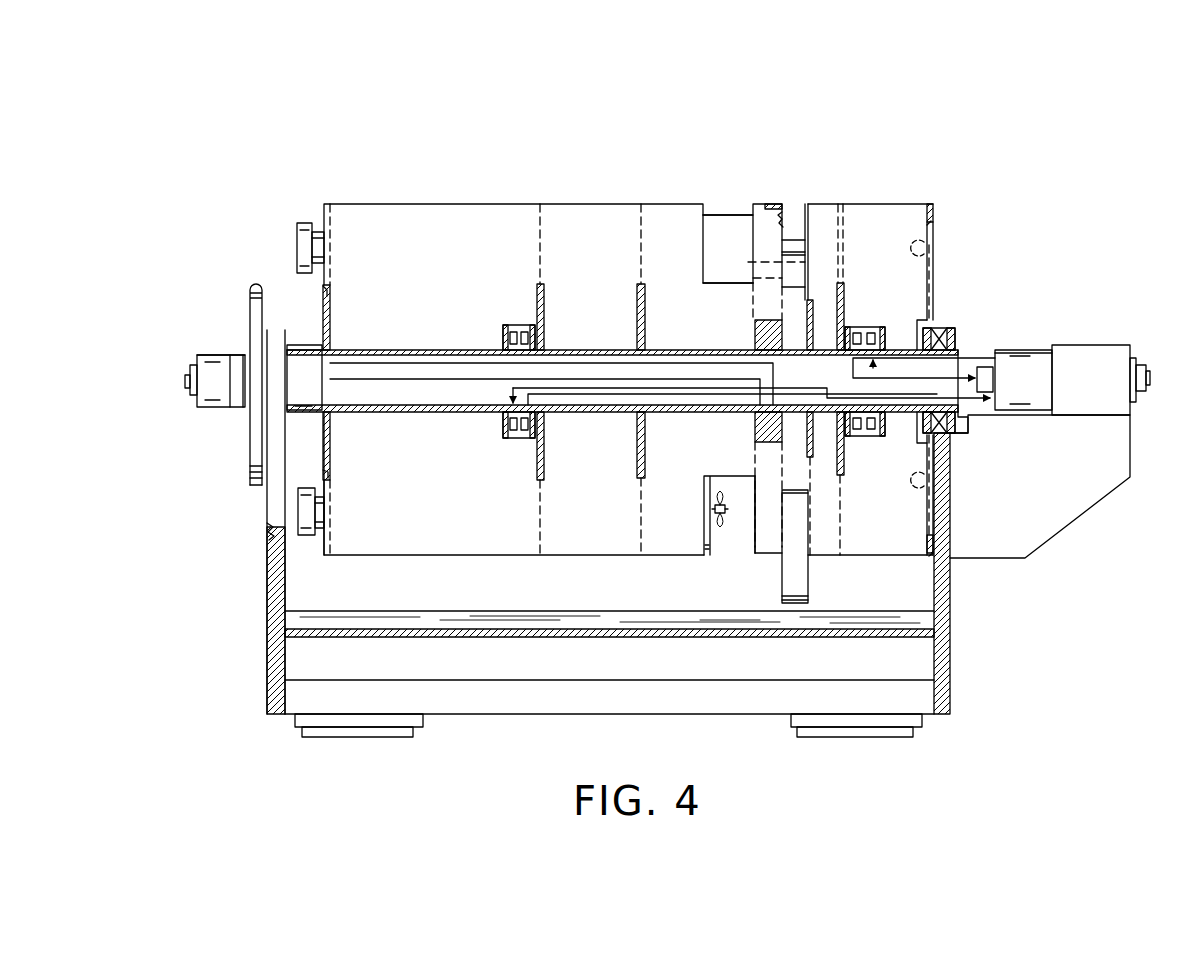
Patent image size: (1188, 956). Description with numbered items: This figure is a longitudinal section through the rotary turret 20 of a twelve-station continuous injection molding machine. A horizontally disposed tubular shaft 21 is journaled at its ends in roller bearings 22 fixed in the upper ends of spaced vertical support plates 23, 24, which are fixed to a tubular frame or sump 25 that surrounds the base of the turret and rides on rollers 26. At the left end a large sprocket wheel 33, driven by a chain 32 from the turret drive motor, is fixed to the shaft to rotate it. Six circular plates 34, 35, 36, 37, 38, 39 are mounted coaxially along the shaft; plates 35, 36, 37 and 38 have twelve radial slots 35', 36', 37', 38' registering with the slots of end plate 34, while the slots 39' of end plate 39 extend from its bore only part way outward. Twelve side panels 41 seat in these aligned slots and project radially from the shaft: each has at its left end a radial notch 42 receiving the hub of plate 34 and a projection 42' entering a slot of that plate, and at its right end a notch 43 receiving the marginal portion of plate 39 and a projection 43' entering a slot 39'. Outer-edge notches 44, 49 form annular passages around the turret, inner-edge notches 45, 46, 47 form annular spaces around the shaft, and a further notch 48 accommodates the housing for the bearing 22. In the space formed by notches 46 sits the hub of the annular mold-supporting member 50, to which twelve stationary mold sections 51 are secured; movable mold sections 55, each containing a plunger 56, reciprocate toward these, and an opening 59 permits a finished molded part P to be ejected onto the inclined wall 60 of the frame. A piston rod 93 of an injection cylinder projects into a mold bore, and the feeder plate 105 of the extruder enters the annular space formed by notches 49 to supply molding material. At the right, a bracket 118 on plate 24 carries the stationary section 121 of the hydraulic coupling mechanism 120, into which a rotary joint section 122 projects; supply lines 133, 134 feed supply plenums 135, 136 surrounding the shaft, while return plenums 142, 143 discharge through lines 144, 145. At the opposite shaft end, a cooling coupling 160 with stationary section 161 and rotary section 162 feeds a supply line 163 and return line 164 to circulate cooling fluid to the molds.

The rotary turret 20 is at (910, 184).
The tubular shaft 21 is at (415, 350).
The roller bearings 22 is at (940, 332).
The support plate 23 is at (268, 505).
The support plate 24 is at (950, 666).
The tubular frame or sump 25 is at (525, 714).
The rollers 26 is at (373, 735).
The chain 32 is at (248, 478).
The sprocket wheel 33 is at (250, 294).
The circular metal plate 34 is at (323, 318).
The circular metal plate 35 is at (558, 382).
The radial slots 35' is at (561, 356).
The circular metal plate 36 is at (625, 381).
The radial slots 36' is at (614, 379).
The circular metal plate 37 is at (792, 427).
The radial slots 37' is at (759, 398).
The circular metal plate 38 is at (858, 357).
The radial slots 38' is at (867, 356).
The circular metal plate 39 is at (956, 374).
The slots 39' is at (956, 365).
The side panels 41 is at (480, 202).
The first radial notch 42 is at (339, 366).
The projection 42' is at (307, 380).
The radial notch 43 is at (906, 386).
The projection 43' is at (965, 390).
The rectangular notch 44 is at (754, 220).
The notch 45 is at (510, 328).
The notch 46 is at (755, 322).
The notch 47 is at (868, 440).
The notch 48 is at (918, 320).
The rectangular notch 49 is at (808, 218).
The mold-supporting member 50 is at (754, 328).
The stationary mold sections 51 is at (772, 204).
The movable mold sections 55 is at (706, 210).
The plunger 56 is at (715, 508).
The opening 59 is at (742, 543).
The inclined wall 60 is at (568, 636).
The piston rod 93 is at (793, 240).
The feeder plate 105 is at (808, 590).
The bracket 118 is at (1090, 515).
The hydraulic coupling mechanism 120 is at (1137, 338).
The stationary section 121 is at (1094, 345).
The rotary joint section 122 is at (1042, 350).
The supply line 133 is at (937, 394).
The supply line 134 is at (982, 362).
The supply plenum 135 is at (510, 388).
The supply plenum 136 is at (870, 332).
The return plenum 142 is at (514, 438).
The return plenum 143 is at (852, 332).
The return line 144 is at (971, 420).
The return line 145 is at (853, 367).
The coupling mechanism 160 is at (192, 413).
The stationary section 161 is at (222, 355).
The rotary section 162 is at (242, 408).
The supply line 163 is at (404, 379).
The return line 164 is at (569, 363).
The molded part P is at (722, 498).